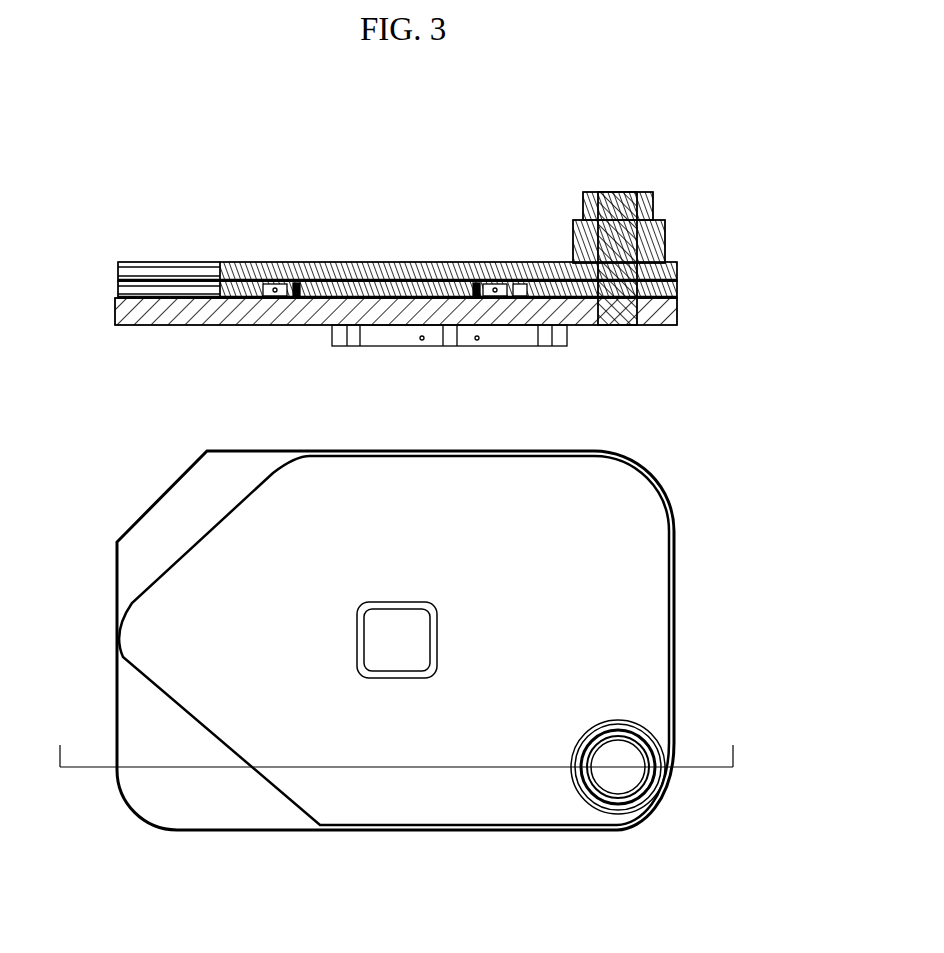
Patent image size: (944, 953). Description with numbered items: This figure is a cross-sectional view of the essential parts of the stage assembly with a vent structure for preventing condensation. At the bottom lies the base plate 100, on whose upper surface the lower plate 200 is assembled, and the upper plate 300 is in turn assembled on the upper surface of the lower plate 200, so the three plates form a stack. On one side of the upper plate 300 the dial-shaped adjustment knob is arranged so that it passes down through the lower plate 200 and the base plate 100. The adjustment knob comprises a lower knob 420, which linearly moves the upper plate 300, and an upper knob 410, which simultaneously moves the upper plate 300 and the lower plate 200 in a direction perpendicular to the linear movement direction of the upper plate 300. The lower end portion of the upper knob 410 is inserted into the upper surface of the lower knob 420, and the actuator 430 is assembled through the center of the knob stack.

The base plate 100 is at (115, 308).
The lower plate 200 is at (118, 291).
The upper plate 300 is at (118, 268).
The upper knob 410 is at (653, 197).
The lower knob 420 is at (665, 240).
The actuator 430 is at (630, 323).